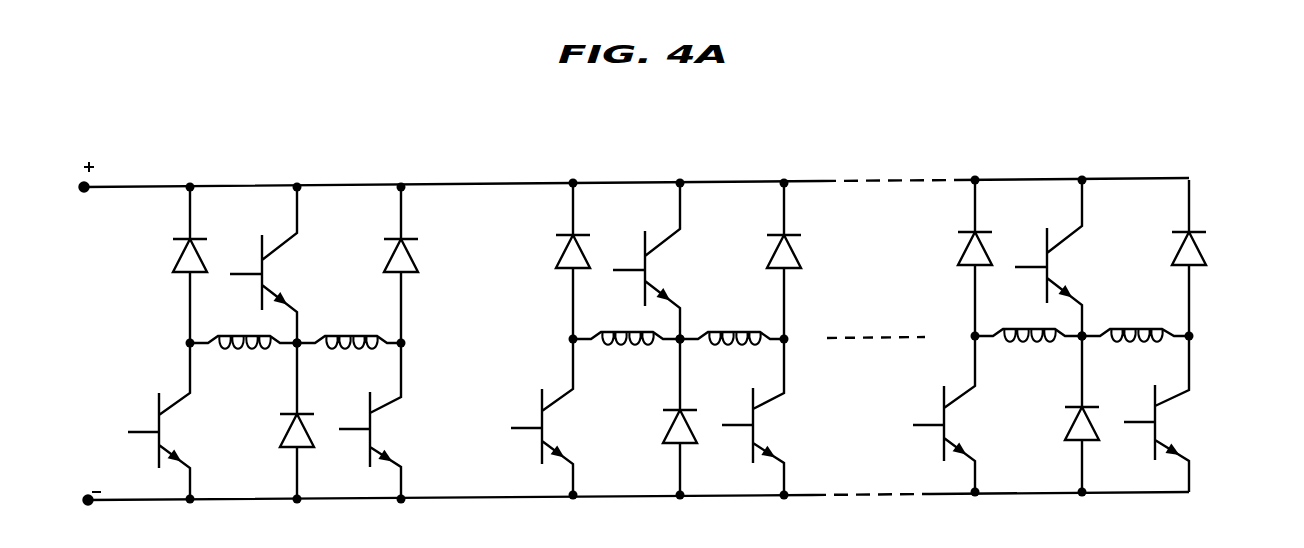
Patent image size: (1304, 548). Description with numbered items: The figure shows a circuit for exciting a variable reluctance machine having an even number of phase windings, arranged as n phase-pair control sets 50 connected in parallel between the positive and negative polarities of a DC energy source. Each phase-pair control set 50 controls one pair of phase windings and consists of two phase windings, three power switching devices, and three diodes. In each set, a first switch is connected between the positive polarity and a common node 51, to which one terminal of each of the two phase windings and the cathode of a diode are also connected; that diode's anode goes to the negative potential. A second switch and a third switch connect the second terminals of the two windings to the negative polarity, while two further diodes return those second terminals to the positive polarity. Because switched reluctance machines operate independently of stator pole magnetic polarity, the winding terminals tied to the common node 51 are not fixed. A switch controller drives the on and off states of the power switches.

The phase-pair control set 50 is at (694, 313).
The common node 51 is at (297, 343).